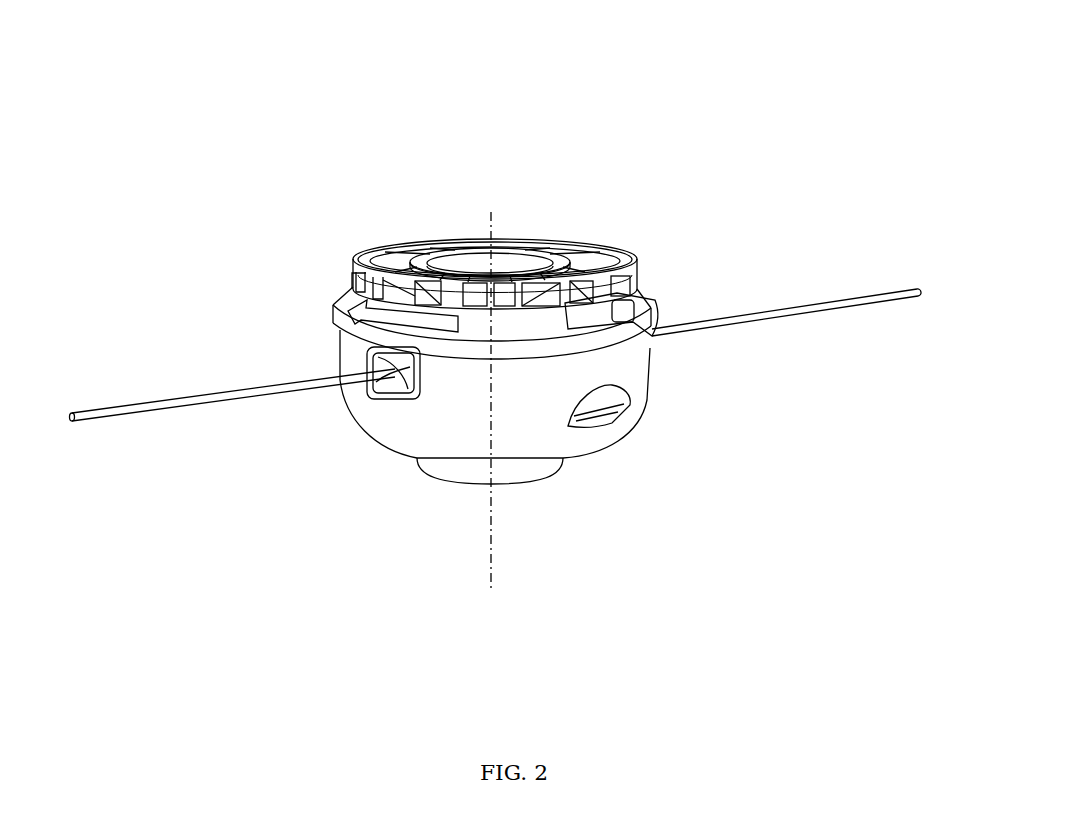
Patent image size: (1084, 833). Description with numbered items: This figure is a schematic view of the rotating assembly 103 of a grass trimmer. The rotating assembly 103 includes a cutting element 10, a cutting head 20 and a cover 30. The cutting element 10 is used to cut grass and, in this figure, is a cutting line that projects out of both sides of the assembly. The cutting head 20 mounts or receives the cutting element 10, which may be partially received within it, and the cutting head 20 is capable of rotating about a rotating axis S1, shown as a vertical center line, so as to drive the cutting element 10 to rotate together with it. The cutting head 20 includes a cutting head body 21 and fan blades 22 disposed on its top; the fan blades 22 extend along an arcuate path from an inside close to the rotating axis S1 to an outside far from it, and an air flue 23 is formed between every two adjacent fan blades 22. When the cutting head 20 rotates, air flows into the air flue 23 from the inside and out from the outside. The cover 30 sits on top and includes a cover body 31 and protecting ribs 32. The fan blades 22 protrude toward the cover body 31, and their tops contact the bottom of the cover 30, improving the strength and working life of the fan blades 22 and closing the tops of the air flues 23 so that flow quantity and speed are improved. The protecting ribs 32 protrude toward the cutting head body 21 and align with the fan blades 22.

The rotating assembly 103 is at (688, 108).
The cutting element 10 is at (786, 305).
The cutting head 20 is at (651, 484).
The cutting head body 21 is at (330, 315).
The fan blades 22 is at (456, 262).
The air flue 23 is at (353, 278).
The cover 30 is at (470, 145).
The cover body 31 is at (526, 243).
The protecting ribs 32 is at (650, 341).
The rotating axis S1 is at (509, 403).